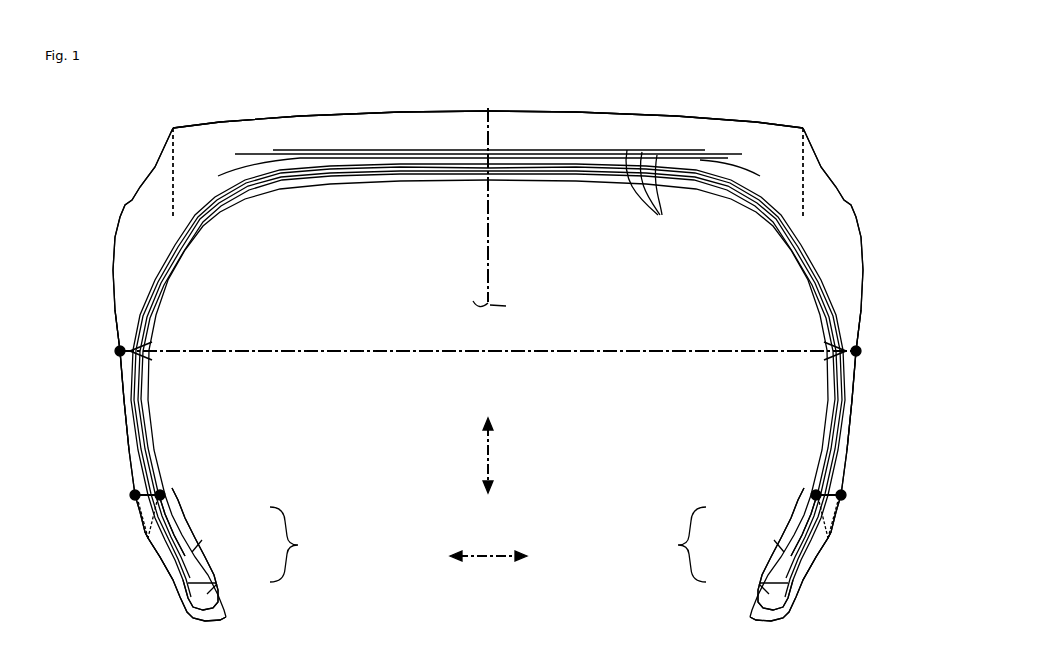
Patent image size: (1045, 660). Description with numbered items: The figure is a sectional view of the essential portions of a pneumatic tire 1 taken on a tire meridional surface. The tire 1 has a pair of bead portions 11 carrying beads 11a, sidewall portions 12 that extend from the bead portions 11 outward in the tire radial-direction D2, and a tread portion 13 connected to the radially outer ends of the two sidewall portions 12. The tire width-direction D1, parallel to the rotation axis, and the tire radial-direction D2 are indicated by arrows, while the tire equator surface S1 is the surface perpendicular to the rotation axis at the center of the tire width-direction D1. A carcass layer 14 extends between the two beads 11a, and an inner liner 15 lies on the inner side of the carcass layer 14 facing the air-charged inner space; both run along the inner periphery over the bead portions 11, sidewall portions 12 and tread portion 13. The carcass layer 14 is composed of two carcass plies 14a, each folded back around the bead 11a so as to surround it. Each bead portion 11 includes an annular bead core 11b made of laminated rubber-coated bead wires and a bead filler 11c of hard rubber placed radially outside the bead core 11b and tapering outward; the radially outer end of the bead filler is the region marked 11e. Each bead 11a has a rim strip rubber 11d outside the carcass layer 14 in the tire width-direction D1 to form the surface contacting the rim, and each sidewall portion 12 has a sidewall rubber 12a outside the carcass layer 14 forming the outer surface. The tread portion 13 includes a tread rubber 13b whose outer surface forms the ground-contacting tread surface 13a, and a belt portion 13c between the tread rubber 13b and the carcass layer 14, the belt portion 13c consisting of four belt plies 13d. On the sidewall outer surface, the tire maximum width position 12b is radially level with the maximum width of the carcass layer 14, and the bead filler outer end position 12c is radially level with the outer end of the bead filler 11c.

The pneumatic tire 1 is at (866, 61).
The bead portion 11 is at (151, 613).
The bead 11a is at (488, 544).
The bead core 11b is at (213, 590).
The bead filler 11c is at (205, 542).
The rim strip rubber 11d is at (173, 558).
The bead filler end 11e is at (168, 486).
The sidewall portion 12 is at (94, 325).
The sidewall rubber 12a is at (127, 381).
The tire maximum width position 12b is at (118, 351).
The bead filler outer end position 12c is at (133, 495).
The tread portion 13 is at (490, 104).
The tread surface 13a is at (347, 112).
The tread rubber 13b is at (437, 128).
The belt portion 13c is at (625, 154).
The belt ply 13d is at (665, 219).
The carcass layer 14 is at (387, 164).
The carcass ply 14a is at (200, 212).
The inner liner 15 is at (540, 183).
The tire equator surface S1 is at (487, 282).
The tire width-direction D1 is at (488, 564).
The tire radial-direction D2 is at (499, 455).